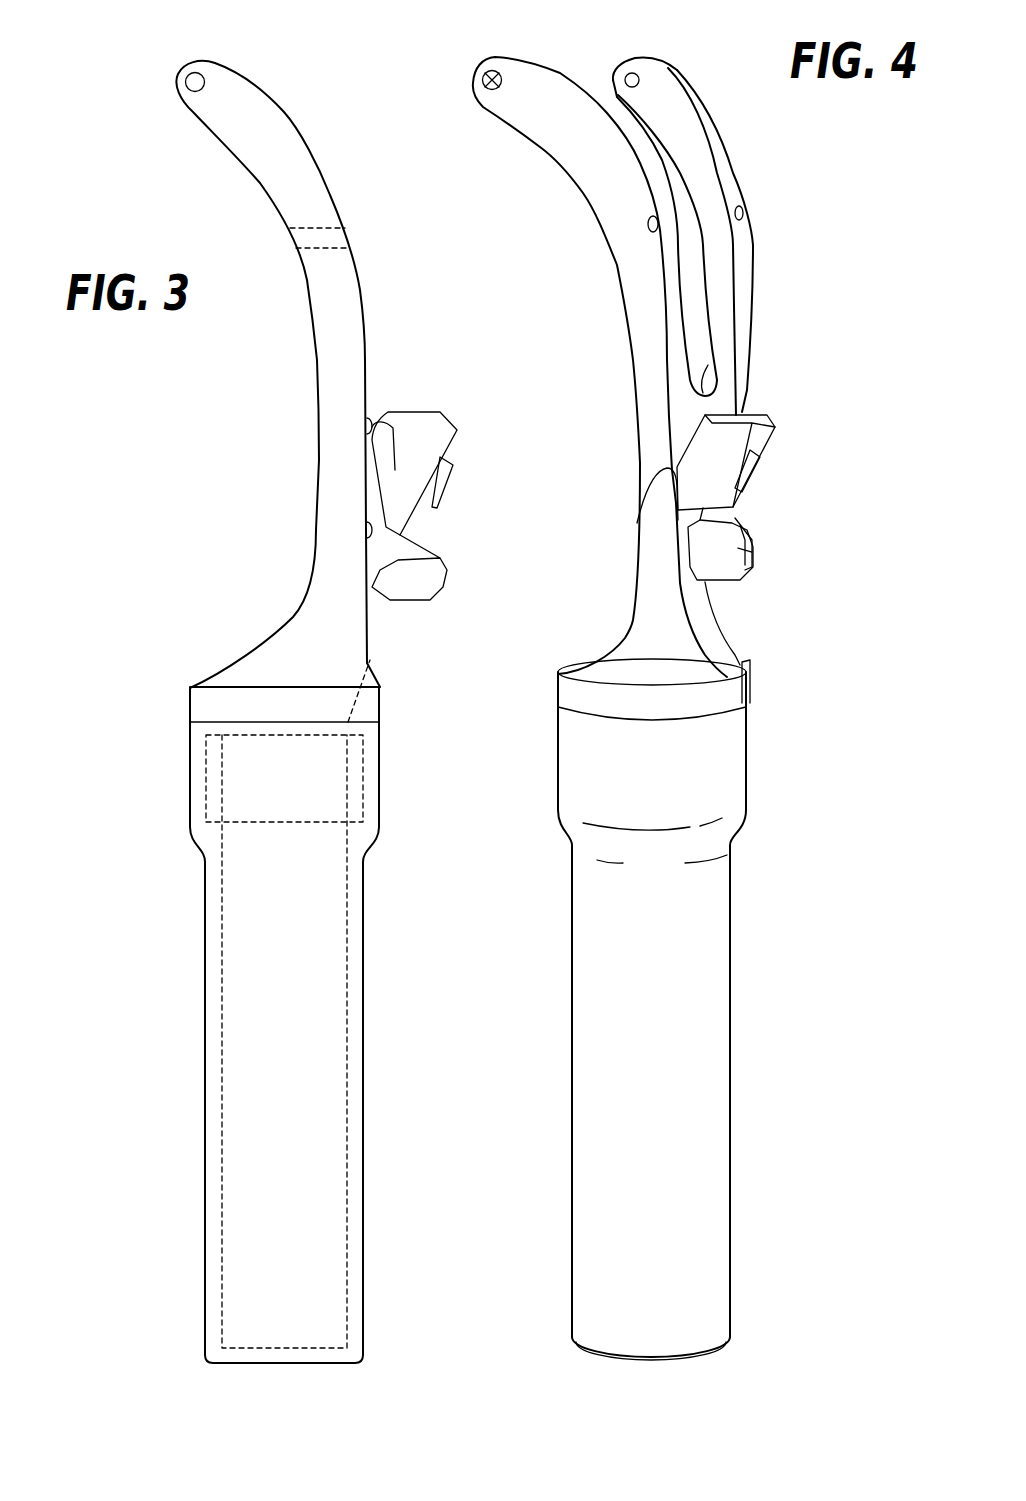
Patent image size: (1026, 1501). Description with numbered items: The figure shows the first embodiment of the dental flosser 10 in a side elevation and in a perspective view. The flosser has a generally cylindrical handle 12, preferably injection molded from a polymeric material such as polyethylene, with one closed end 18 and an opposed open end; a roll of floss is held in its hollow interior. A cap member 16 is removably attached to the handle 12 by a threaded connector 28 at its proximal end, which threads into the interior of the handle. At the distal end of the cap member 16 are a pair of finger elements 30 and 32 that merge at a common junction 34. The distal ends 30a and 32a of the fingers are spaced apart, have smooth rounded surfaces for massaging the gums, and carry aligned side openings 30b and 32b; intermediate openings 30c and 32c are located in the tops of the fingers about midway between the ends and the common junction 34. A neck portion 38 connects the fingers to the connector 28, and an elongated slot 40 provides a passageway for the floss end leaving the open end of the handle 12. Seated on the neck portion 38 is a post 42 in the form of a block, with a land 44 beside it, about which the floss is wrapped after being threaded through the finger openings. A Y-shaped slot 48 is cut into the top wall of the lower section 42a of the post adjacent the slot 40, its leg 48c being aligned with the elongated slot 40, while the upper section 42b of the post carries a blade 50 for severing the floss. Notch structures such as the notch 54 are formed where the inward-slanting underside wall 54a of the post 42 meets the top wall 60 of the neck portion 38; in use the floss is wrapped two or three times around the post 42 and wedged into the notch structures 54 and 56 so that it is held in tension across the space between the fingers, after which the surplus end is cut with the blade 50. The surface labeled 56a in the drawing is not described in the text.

In FIG. 3, the dental flosser 10 is at (184, 860).
In FIG. 4, the dental flosser 10 is at (762, 854).
In FIG. 3, the handle 12 is at (320, 1040).
In FIG. 4, the handle 12 is at (710, 1145).
In FIG. 3, the cap member 16 is at (262, 606).
In FIG. 4, the cap member 16 is at (620, 630).
In FIG. 3, the closed end 18 is at (326, 1362).
In FIG. 3, the threaded connector 28 is at (205, 760).
In FIG. 3, the finger element 30 is at (300, 110).
In FIG. 4, the finger element 30 is at (623, 157).
In FIG. 3, the distal end of finger element 30a is at (180, 78).
In FIG. 4, the distal end of finger element 30a is at (478, 75).
In FIG. 3, the opening 30b is at (178, 100).
In FIG. 4, the opening 30b is at (482, 97).
In FIG. 3, the intermediate opening 30c is at (345, 235).
In FIG. 4, the intermediate opening 30c is at (652, 224).
In FIG. 4, the finger element 32 is at (710, 125).
In FIG. 4, the distal end of finger element 32a is at (615, 72).
In FIG. 4, the opening 32b is at (632, 66).
In FIG. 4, the intermediate opening 32c is at (748, 215).
In FIG. 4, the common junction 34 is at (710, 360).
In FIG. 3, the neck portion 38 is at (330, 476).
In FIG. 4, the neck portion 38 is at (648, 437).
In FIG. 4, the elongated slot 40 is at (753, 680).
In FIG. 3, the post 42 is at (425, 440).
In FIG. 4, the post 42 is at (762, 424).
In FIG. 3, the lower section of post 42a is at (430, 590).
In FIG. 4, the lower section of post 42a is at (745, 578).
In FIG. 3, the upper section of post 42b is at (440, 412).
In FIG. 4, the upper section of post 42b is at (718, 410).
In FIG. 3, the land 44 is at (368, 535).
In FIG. 4, the land 44 is at (667, 469).
In FIG. 4, the Y-shaped slot 48 is at (742, 524).
In FIG. 4, the leg of Y-shaped slot 48c is at (755, 553).
In FIG. 3, the blade 50 is at (447, 470).
In FIG. 4, the blade 50 is at (762, 460).
In FIG. 3, the notch structure 54 is at (388, 400).
In FIG. 3, the underside wall 54a is at (396, 461).
In FIG. 3, the notch structure 56 is at (382, 612).
In FIG. 3, the projection surface 56a is at (420, 565).
In FIG. 3, the top wall of neck portion 60 is at (363, 408).
In FIG. 4, the top wall of neck portion 60 is at (740, 395).